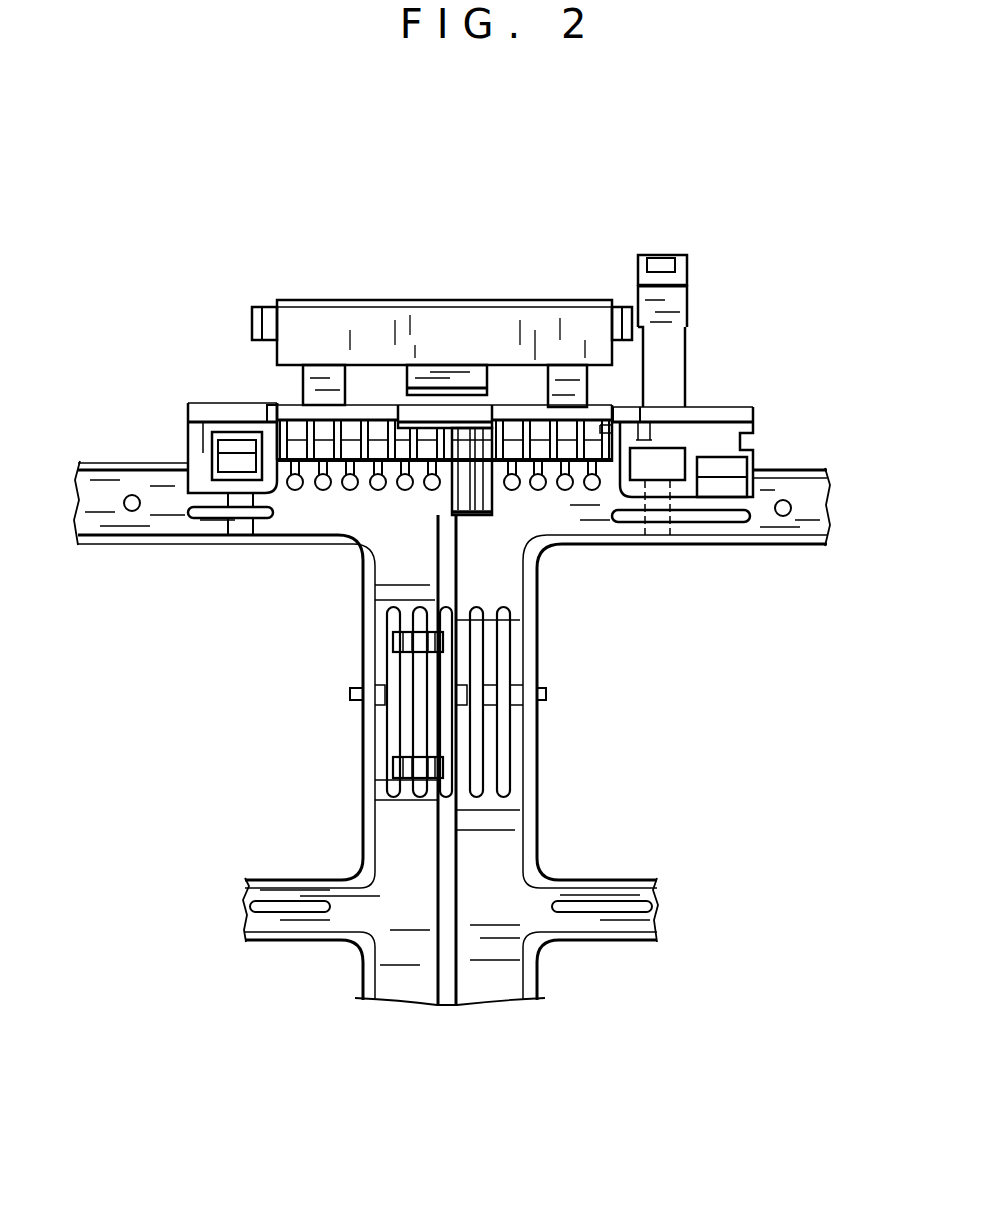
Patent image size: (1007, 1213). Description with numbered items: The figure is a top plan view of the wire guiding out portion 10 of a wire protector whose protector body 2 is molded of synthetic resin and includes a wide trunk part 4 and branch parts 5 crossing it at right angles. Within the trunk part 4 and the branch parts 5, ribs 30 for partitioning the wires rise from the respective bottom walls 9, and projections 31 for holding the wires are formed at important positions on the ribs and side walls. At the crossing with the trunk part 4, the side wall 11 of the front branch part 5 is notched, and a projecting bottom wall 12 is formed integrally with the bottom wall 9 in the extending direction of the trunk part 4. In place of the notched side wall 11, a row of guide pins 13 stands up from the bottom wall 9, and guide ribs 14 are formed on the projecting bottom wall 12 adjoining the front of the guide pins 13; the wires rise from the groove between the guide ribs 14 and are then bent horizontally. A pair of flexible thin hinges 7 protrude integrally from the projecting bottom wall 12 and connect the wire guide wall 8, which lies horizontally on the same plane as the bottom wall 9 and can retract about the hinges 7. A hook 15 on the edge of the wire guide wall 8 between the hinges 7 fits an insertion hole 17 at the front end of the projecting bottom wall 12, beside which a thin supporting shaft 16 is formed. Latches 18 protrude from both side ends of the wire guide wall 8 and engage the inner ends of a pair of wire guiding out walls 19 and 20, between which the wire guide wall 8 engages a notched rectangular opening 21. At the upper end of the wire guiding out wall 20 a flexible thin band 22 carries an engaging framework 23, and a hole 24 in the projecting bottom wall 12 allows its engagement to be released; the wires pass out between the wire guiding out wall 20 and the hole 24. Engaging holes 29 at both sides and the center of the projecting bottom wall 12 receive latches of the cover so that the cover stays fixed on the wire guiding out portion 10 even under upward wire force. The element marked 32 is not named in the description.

The protector body 2 is at (650, 763).
The trunk part 4 is at (362, 659).
The branch part 5 is at (648, 551).
The thin hinge 7 is at (327, 377).
The wire guide wall 8 is at (385, 320).
The bottom wall 9 is at (578, 517).
The wire guiding out portion 10 is at (505, 268).
The side wall 11 is at (806, 470).
The projecting bottom wall 12 is at (597, 412).
The guide pin 13 is at (505, 490).
The guide rib 14 is at (510, 427).
The hook 15 is at (455, 382).
The supporting shaft 16 is at (437, 413).
The insertion hole 17 is at (406, 420).
The latch 18 is at (253, 317).
The wire guiding out wall 19 is at (203, 403).
The wire guiding out wall 20 is at (753, 413).
The notched rectangular opening 21 is at (262, 408).
The flexible thin band 22 is at (684, 298).
The engaging framework 23 is at (677, 257).
The hole 24 is at (673, 468).
The engaging hole 29 is at (232, 447).
The rib 30 is at (270, 519).
The projection 31 is at (520, 702).
The end wall 32 is at (282, 405).